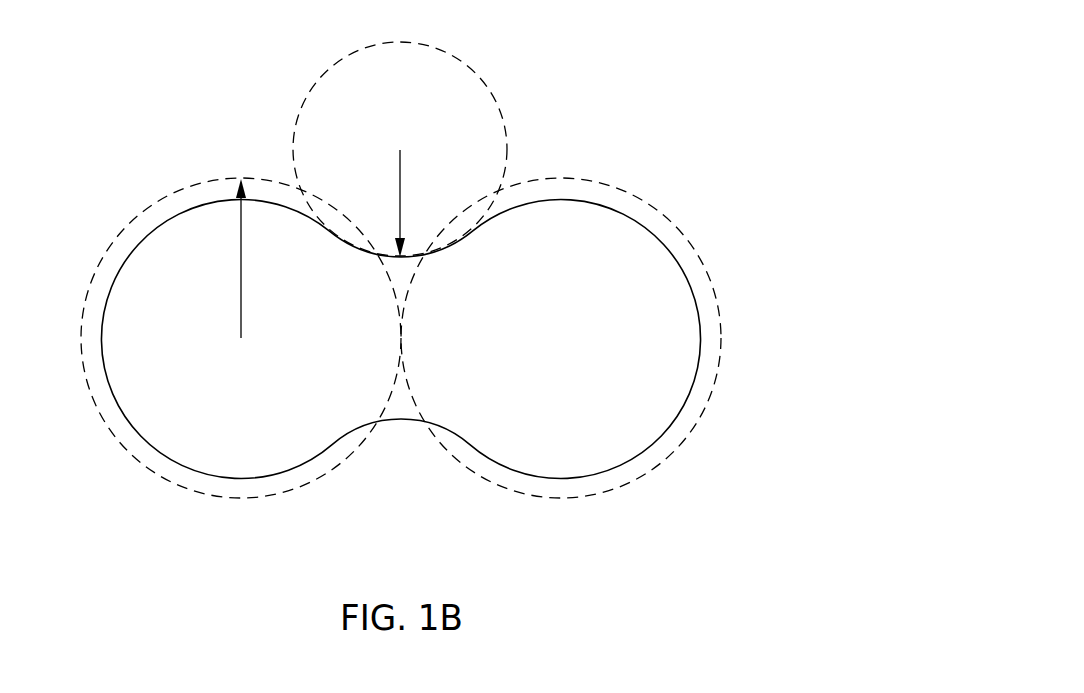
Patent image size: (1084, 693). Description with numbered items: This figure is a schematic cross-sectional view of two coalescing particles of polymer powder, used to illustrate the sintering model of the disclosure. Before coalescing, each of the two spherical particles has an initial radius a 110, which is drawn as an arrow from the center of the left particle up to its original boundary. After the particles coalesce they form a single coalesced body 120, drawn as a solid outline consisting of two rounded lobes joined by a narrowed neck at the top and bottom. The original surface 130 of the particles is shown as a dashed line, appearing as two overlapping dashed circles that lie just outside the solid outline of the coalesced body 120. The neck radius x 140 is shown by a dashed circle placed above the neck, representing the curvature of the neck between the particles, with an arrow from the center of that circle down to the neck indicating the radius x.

The initial radius a 110 is at (241, 310).
The coalesced body 120 is at (650, 228).
The original surface 130 is at (703, 272).
The neck radius x 140 is at (400, 178).